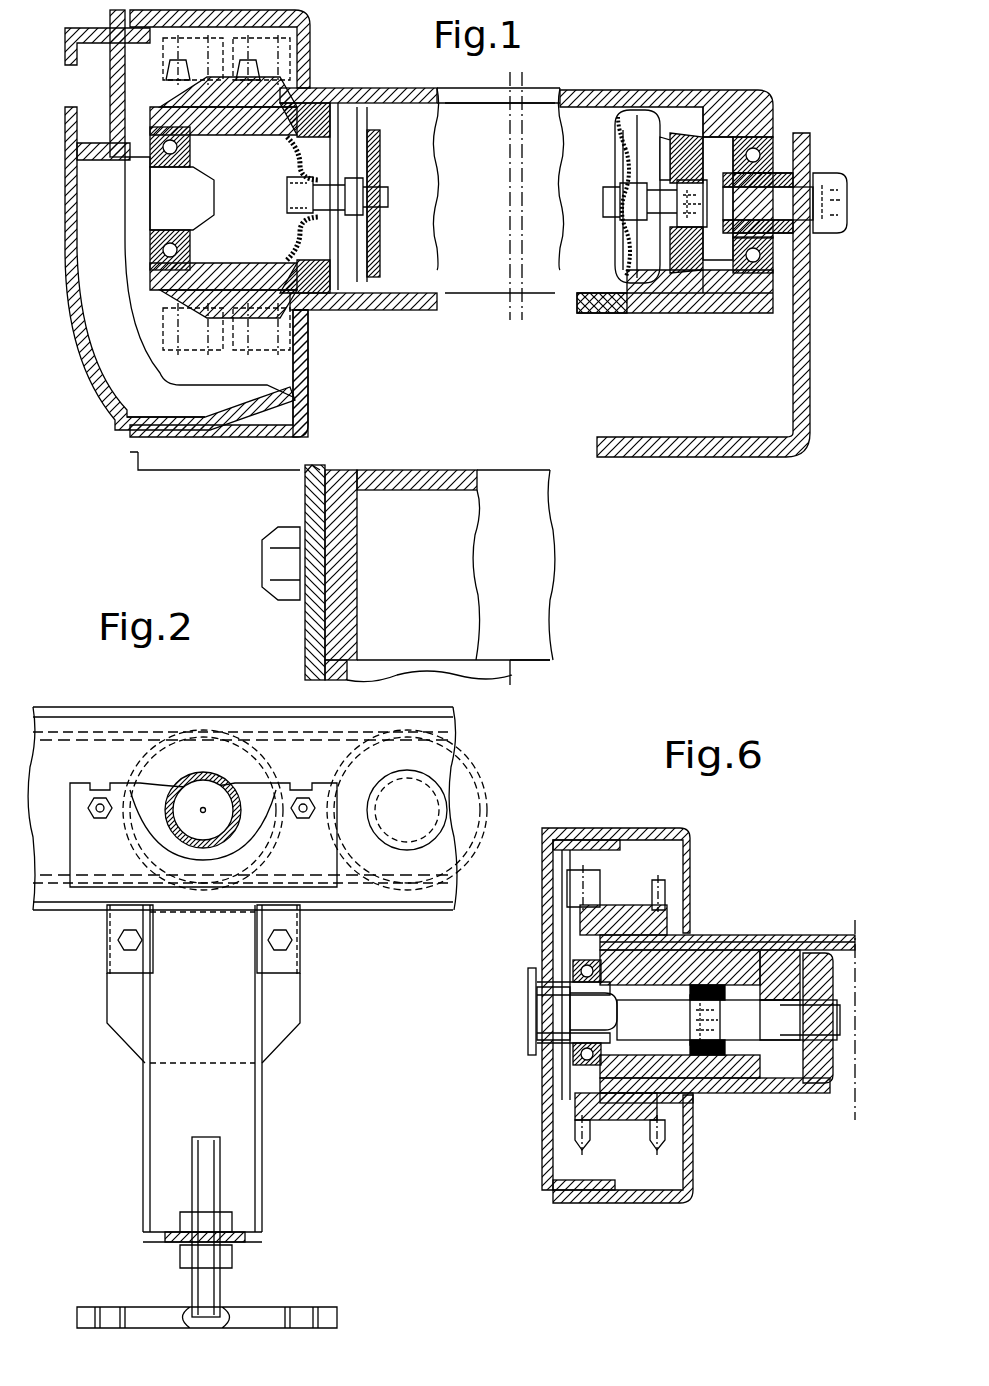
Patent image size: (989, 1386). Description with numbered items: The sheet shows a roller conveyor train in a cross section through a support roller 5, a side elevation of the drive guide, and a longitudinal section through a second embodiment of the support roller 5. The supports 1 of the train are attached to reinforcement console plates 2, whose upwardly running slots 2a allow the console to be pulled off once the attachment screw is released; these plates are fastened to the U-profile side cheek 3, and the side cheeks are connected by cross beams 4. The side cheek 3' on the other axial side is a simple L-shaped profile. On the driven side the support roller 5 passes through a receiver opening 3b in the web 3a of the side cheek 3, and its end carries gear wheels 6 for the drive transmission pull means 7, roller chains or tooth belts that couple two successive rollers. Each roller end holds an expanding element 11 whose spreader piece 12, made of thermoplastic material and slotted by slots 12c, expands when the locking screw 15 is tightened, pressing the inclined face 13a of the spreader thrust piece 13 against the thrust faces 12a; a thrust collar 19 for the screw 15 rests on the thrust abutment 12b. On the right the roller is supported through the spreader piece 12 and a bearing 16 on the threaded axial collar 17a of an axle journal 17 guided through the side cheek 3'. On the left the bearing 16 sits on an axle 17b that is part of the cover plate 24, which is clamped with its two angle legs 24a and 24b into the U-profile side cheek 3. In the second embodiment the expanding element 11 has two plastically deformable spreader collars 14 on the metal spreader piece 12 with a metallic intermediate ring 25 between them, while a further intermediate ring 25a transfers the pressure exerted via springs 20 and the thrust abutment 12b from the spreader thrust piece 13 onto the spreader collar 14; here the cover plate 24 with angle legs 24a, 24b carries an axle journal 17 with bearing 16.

In FIG. 1, the support 1 is at (497, 668).
In FIG. 2, the support 1 is at (238, 1115).
In FIG. 1, the reinforcement console plate 2 is at (310, 495).
In FIG. 2, the reinforcement console plate 2 is at (288, 1015).
In FIG. 2, the slot 2a is at (97, 790).
In FIG. 1, the side cheek 3 is at (186, 261).
In FIG. 2, the side cheek 3 is at (242, 837).
In FIG. 6, the side cheek 3 is at (634, 1006).
In FIG. 1, the side cheek 3' is at (703, 322).
In FIG. 1, the web 3a is at (300, 387).
In FIG. 1, the receiver opening 3b is at (313, 317).
In FIG. 1, the cross beam 4 is at (540, 558).
In FIG. 2, the cross beam 4 is at (298, 968).
In FIG. 1, the support roller 5 is at (473, 295).
In FIG. 2, the support roller 5 is at (172, 795).
In FIG. 6, the support roller 5 is at (817, 1083).
In FIG. 1, the drive gear wheel 6 is at (243, 350).
In FIG. 2, the drive gear wheel 6 is at (265, 757).
In FIG. 6, the drive gear wheel 6 is at (583, 1143).
In FIG. 1, the drive transmission pull means 7 is at (283, 50).
In FIG. 2, the drive transmission pull means 7 is at (88, 730).
In FIG. 1, the expanding element 11 is at (320, 78).
In FIG. 6, the expanding element 11 is at (710, 1117).
In FIG. 1, the spreader piece 12 is at (375, 290).
In FIG. 6, the spreader piece 12 is at (772, 1067).
In FIG. 1, the thrust face 12a is at (665, 115).
In FIG. 1, the thrust abutment 12b is at (705, 115).
In FIG. 6, the thrust abutment 12b is at (738, 987).
In FIG. 1, the slot 12c is at (632, 300).
In FIG. 1, the spreader thrust piece 13 is at (600, 133).
In FIG. 6, the spreader thrust piece 13 is at (822, 970).
In FIG. 1, the thrust face 13a is at (650, 117).
In FIG. 6, the spreader collar 14 is at (633, 940).
In FIG. 1, the locking screw 15 is at (607, 217).
In FIG. 6, the locking screw 15 is at (832, 1053).
In FIG. 1, the bearing 16 is at (758, 312).
In FIG. 6, the bearing 16 is at (570, 1063).
In FIG. 1, the axle journal 17 is at (830, 175).
In FIG. 6, the axle journal 17 is at (547, 1017).
In FIG. 1, the axial collar 17a is at (800, 250).
In FIG. 1, the axle 17b is at (183, 197).
In FIG. 1, the thrust collar 19 is at (688, 125).
In FIG. 6, the spring 20 is at (718, 1055).
In FIG. 1, the cover plate 24 is at (103, 397).
In FIG. 6, the cover plate 24 is at (548, 943).
In FIG. 6, the angle leg 24a is at (608, 845).
In FIG. 1, the angle leg 24b is at (133, 430).
In FIG. 6, the angle leg 24b is at (570, 1193).
In FIG. 6, the intermediate ring 25 is at (715, 940).
In FIG. 6, the intermediate ring 25a is at (790, 942).